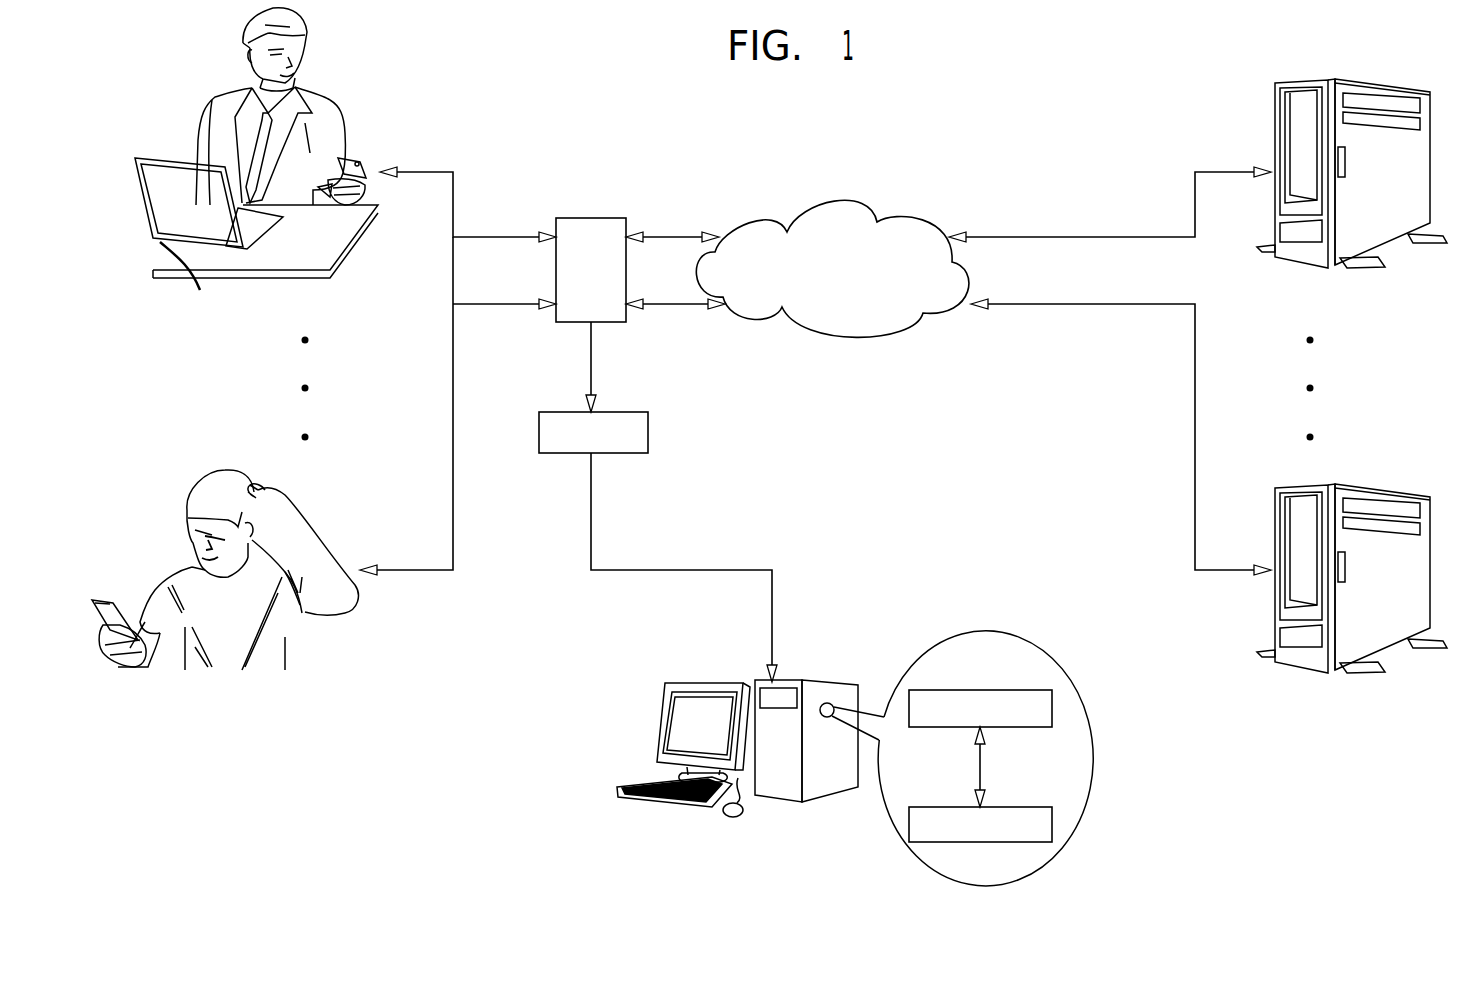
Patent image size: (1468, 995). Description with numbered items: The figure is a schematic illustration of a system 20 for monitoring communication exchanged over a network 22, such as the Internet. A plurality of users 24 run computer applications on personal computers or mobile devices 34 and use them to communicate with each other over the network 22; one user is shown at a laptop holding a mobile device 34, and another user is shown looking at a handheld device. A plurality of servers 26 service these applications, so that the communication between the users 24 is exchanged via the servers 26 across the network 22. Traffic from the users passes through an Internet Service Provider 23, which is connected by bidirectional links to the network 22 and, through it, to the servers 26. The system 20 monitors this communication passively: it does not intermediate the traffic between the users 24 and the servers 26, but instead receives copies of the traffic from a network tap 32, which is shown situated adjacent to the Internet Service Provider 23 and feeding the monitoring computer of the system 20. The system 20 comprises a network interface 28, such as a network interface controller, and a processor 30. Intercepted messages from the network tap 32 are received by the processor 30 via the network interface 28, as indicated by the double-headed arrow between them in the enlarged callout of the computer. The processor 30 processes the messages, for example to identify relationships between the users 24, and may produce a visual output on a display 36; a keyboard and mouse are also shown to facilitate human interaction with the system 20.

The system 20 is at (730, 712).
The network 22 is at (752, 221).
The Internet Service Provider 23 is at (590, 217).
The users 24 is at (240, 92).
The servers 26 is at (1275, 90).
The network interface 28 is at (1000, 689).
The processor 30 is at (1036, 806).
The network tap 32 is at (553, 411).
The mobile device 34 is at (366, 156).
The display 36 is at (664, 705).